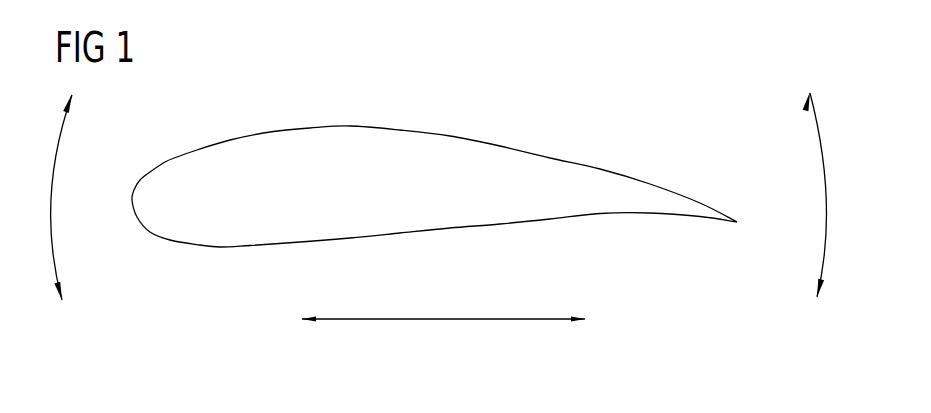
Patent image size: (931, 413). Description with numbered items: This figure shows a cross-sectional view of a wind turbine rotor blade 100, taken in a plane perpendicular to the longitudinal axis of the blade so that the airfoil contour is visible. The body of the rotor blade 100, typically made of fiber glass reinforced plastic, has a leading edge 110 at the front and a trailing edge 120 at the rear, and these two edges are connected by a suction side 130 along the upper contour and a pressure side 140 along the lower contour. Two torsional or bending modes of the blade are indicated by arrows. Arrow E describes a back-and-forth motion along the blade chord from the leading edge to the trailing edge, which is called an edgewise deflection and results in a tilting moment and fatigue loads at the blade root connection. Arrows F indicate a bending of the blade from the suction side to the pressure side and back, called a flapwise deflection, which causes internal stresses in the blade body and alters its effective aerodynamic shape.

The rotor blade 100 is at (440, 178).
The leading edge 110 is at (135, 212).
The trailing edge 120 is at (739, 223).
The suction side 130 is at (447, 134).
The pressure side 140 is at (397, 234).
The arrows F (flapwise deflection) F is at (55, 167).
The arrow E (edgewise deflection) E is at (500, 318).